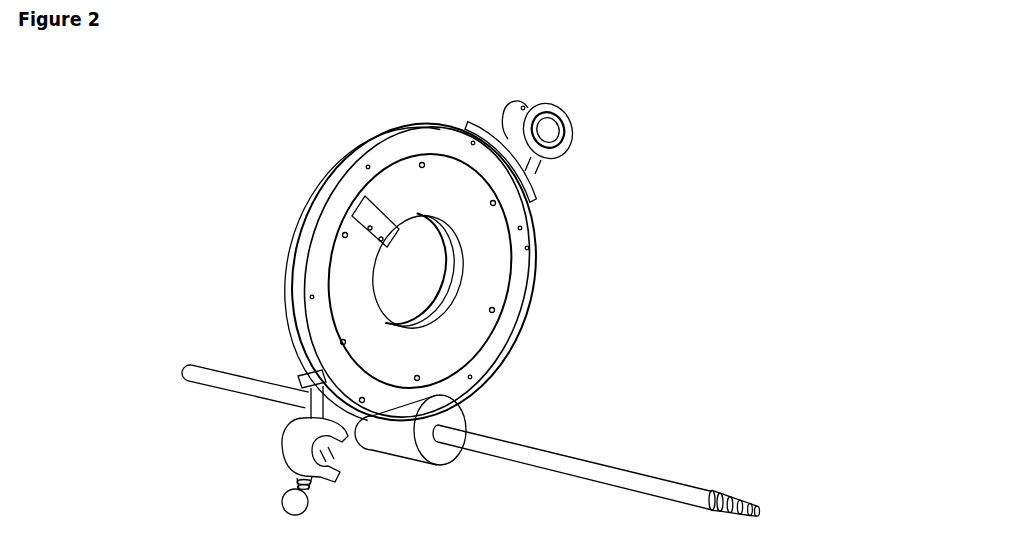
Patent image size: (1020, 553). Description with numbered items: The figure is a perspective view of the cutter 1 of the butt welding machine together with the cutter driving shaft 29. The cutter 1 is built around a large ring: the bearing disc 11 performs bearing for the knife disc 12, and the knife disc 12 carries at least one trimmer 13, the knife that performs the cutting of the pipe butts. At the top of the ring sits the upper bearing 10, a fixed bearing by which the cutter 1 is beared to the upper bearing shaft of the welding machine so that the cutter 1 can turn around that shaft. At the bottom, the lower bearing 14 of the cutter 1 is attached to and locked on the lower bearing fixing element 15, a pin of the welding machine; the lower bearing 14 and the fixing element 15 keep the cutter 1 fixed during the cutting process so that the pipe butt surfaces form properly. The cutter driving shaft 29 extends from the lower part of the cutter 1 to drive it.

The cutter 1 is at (415, 260).
The upper bearing 10 is at (523, 108).
The bearing disc 11 is at (522, 227).
The knife disc 12 is at (483, 275).
The trimmer (knife) 13 is at (370, 229).
The lower bearing 14 is at (335, 432).
The lower bearing fixing element 15 is at (290, 500).
The cutter driving shaft 29 is at (664, 488).